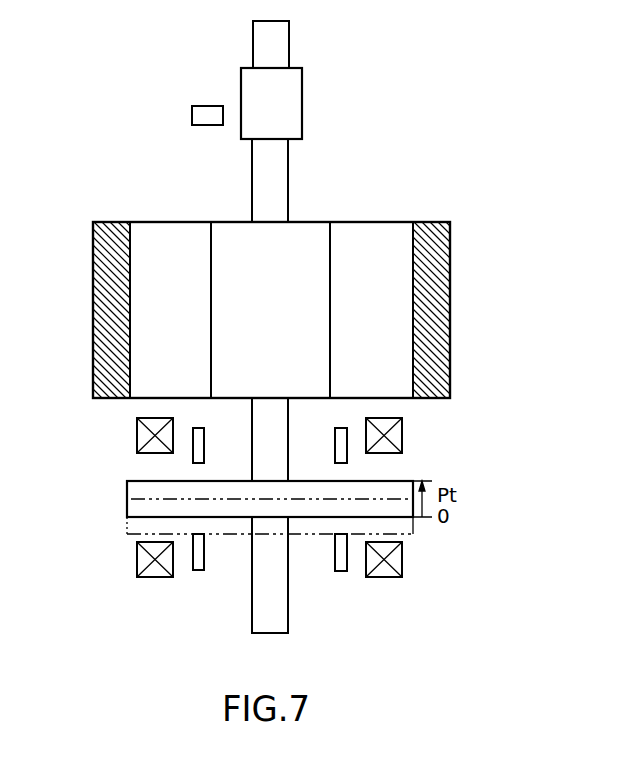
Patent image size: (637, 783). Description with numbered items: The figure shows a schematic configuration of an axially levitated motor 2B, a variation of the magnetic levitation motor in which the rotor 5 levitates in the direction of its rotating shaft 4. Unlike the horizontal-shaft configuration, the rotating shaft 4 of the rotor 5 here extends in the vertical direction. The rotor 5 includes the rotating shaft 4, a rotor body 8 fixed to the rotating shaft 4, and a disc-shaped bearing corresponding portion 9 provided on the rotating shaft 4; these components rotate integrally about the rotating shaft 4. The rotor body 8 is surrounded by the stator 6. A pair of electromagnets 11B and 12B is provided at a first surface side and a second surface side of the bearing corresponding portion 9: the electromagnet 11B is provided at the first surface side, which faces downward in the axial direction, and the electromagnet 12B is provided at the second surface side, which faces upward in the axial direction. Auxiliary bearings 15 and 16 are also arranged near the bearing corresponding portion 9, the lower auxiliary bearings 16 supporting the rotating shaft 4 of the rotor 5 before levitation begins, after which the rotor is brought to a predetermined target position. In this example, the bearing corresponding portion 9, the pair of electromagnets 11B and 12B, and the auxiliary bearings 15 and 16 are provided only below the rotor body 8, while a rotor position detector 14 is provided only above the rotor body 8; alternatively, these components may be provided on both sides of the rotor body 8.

The axially levitated motor 2B is at (444, 113).
The rotating shaft 4 is at (261, 178).
The rotor 5 is at (312, 208).
The stator 6 is at (432, 310).
The rotor body 8 is at (318, 271).
The bearing corresponding portion 9 is at (127, 483).
The electromagnet 11B is at (135, 563).
The electromagnet 12B is at (135, 440).
The rotor position detector 14 is at (200, 113).
The auxiliary bearing 15 is at (200, 447).
The auxiliary bearing 16 is at (200, 568).